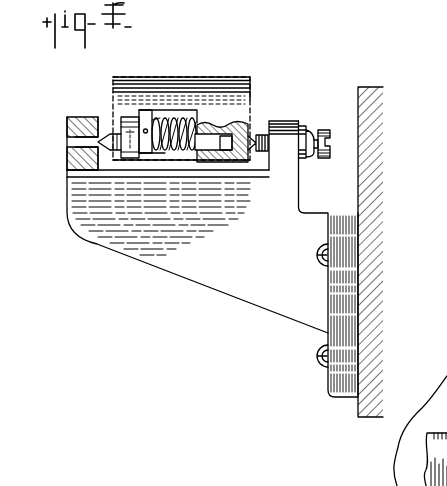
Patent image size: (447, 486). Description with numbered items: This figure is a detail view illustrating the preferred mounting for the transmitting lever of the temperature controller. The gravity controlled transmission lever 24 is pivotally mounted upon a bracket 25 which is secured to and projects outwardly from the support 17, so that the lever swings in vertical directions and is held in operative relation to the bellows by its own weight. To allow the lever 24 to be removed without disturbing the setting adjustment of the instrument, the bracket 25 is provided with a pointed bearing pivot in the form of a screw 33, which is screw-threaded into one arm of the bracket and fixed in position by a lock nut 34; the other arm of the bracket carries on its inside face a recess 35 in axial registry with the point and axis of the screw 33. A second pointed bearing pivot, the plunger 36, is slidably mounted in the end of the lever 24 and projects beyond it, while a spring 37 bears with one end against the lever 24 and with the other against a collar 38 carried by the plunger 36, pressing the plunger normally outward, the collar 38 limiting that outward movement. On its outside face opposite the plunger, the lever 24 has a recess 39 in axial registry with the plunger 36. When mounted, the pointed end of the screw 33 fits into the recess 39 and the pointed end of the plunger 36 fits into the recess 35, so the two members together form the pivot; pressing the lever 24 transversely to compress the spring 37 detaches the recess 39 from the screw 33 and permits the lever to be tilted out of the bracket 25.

The support 17 is at (358, 187).
The transmission lever 24 is at (240, 78).
The bracket 25 is at (100, 233).
The screw 33 is at (254, 140).
The lock nut 34 is at (305, 126).
The recess 35 is at (95, 138).
The plunger 36 is at (111, 131).
The spring 37 is at (172, 125).
The collar 38 is at (143, 128).
The recess 39 is at (248, 160).